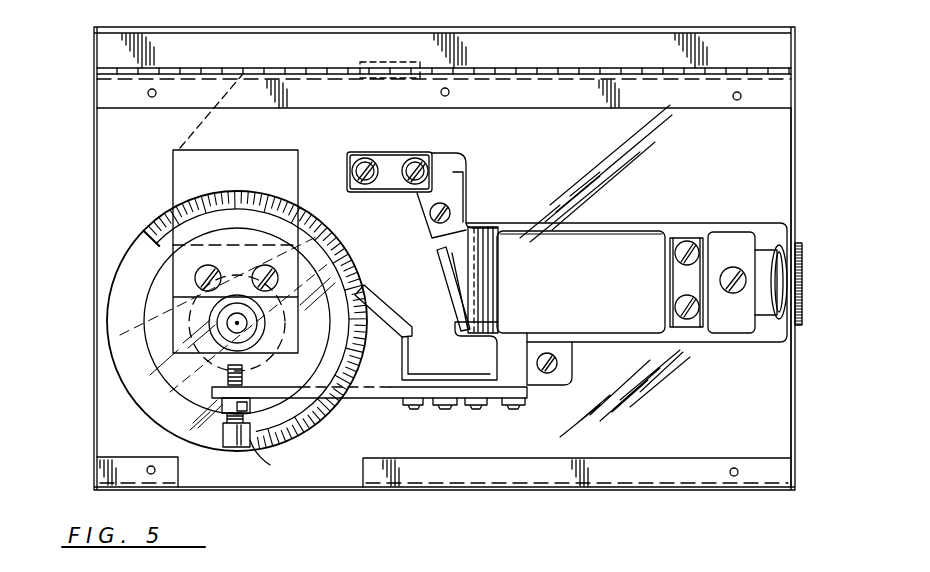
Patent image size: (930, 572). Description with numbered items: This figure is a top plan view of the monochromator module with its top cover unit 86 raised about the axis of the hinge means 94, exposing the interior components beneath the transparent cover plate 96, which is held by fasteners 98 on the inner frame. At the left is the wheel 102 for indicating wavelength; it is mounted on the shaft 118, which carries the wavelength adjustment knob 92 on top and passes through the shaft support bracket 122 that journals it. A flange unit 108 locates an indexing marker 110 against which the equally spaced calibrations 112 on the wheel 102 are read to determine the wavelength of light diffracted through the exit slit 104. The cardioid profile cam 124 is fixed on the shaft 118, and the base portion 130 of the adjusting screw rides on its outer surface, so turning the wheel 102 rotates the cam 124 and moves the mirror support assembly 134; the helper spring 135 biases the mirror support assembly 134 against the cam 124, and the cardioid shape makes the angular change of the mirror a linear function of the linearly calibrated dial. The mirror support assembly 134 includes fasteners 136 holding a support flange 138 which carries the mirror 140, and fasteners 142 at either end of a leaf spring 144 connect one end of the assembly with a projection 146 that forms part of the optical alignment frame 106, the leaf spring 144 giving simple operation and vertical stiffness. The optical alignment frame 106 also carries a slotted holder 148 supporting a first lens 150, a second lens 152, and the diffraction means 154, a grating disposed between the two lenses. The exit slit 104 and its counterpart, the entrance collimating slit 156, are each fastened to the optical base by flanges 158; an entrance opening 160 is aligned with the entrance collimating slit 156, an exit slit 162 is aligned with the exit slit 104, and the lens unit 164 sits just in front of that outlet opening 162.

The top cover unit 86 is at (790, 30).
The wavelength adjustment knob 92 is at (444, 514).
The hinge means 94 is at (790, 98).
The transparent cover plate 96 is at (783, 204).
The fasteners 98 is at (156, 474).
The wheel 102 is at (135, 293).
The exit slit 104 is at (703, 273).
The optical alignment frame 106 is at (657, 232).
The flange unit 108 is at (295, 170).
The indexing marker 110 is at (240, 172).
The calibrations 112 is at (312, 222).
The shaft 118 is at (340, 398).
The shaft support bracket 122 is at (215, 358).
The cardioid profile cam 124 is at (223, 355).
The base portion 130 is at (248, 363).
The mirror support assembly 134 is at (435, 398).
The helper spring 135 is at (220, 405).
The fasteners 136 is at (413, 405).
The support flange 138 is at (410, 364).
The mirror 140 is at (373, 302).
The fasteners 142 is at (473, 405).
The leaf spring 144 is at (490, 402).
The projection 146 is at (517, 372).
The slotted holder 148 is at (436, 289).
The first lens 150 is at (450, 298).
The second lens 152 is at (490, 283).
The diffraction means 154 is at (487, 318).
The entrance collimating slit 156 is at (385, 152).
The flanges 158 is at (387, 182).
The entrance opening 160 is at (403, 66).
The exit slit 162 is at (830, 262).
The lens unit 164 is at (774, 325).